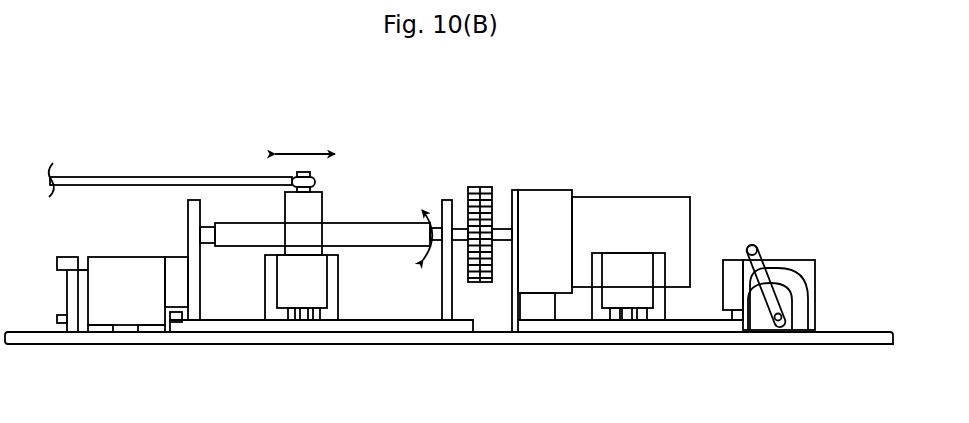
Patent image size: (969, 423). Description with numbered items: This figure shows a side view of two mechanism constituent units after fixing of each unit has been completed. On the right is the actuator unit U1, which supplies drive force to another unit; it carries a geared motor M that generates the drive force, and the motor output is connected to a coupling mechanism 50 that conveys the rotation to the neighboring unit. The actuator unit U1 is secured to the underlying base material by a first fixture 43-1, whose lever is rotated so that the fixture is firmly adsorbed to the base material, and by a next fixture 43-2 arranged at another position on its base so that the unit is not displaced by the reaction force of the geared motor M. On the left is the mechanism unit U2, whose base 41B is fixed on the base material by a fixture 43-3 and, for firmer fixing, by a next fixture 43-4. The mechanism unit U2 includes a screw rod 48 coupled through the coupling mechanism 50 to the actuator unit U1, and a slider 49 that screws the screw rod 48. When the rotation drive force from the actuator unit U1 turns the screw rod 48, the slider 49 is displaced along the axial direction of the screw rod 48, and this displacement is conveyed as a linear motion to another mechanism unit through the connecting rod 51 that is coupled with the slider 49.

The actuator unit U1 is at (748, 145).
The mechanism unit U2 is at (120, 146).
The connecting rod 51 is at (217, 177).
The screw rod 48 is at (380, 222).
The slider 49 is at (315, 235).
The coupling mechanism 50 is at (475, 186).
The geared motor M is at (642, 196).
The first fixture 43-1 is at (815, 270).
The next fixture 43-2 is at (665, 258).
The fixture 43-3 is at (120, 257).
The next fixture 43-4 is at (340, 320).
The base 41B is at (257, 321).